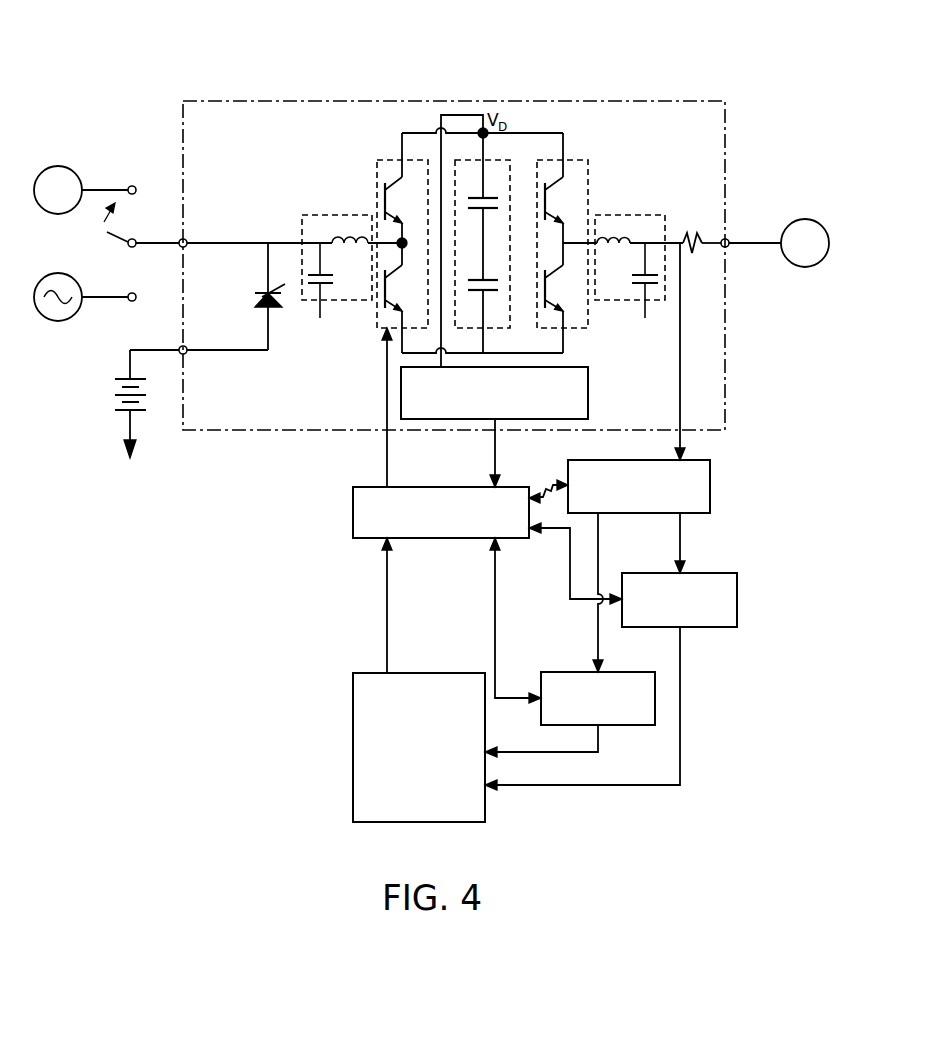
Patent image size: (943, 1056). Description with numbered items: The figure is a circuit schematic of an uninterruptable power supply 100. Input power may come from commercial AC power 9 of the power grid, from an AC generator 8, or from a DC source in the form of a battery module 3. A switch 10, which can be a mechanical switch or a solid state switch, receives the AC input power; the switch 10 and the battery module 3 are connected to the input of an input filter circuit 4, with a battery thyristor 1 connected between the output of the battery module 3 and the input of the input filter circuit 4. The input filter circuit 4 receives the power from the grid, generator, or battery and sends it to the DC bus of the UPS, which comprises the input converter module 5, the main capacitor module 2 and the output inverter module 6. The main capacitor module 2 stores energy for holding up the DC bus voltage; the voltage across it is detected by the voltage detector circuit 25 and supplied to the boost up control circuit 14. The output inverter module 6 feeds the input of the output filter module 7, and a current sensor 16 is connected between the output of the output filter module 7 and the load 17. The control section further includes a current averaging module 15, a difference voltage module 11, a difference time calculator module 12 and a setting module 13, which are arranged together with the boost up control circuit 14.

The battery thyristor 1 is at (256, 297).
The main capacitor module 2 is at (518, 327).
The battery module 3 is at (118, 400).
The input filter circuit 4 is at (327, 215).
The input converter module 5 is at (377, 167).
The output inverter module 6 is at (590, 165).
The output filter module 7 is at (640, 215).
The AC generator 8 is at (58, 164).
The commercial AC power 9 is at (58, 322).
The switch 10 is at (133, 184).
The difference voltage module 11 is at (739, 602).
The difference time calculator module 12 is at (563, 672).
The setting module 13 is at (353, 745).
The boost up control circuit 14 is at (353, 510).
The current averaging module 15 is at (712, 483).
The current sensor 16 is at (690, 232).
The load 17 is at (805, 219).
The voltage detector circuit 25 is at (590, 392).
The uninterruptable power supply 100 is at (683, 80).